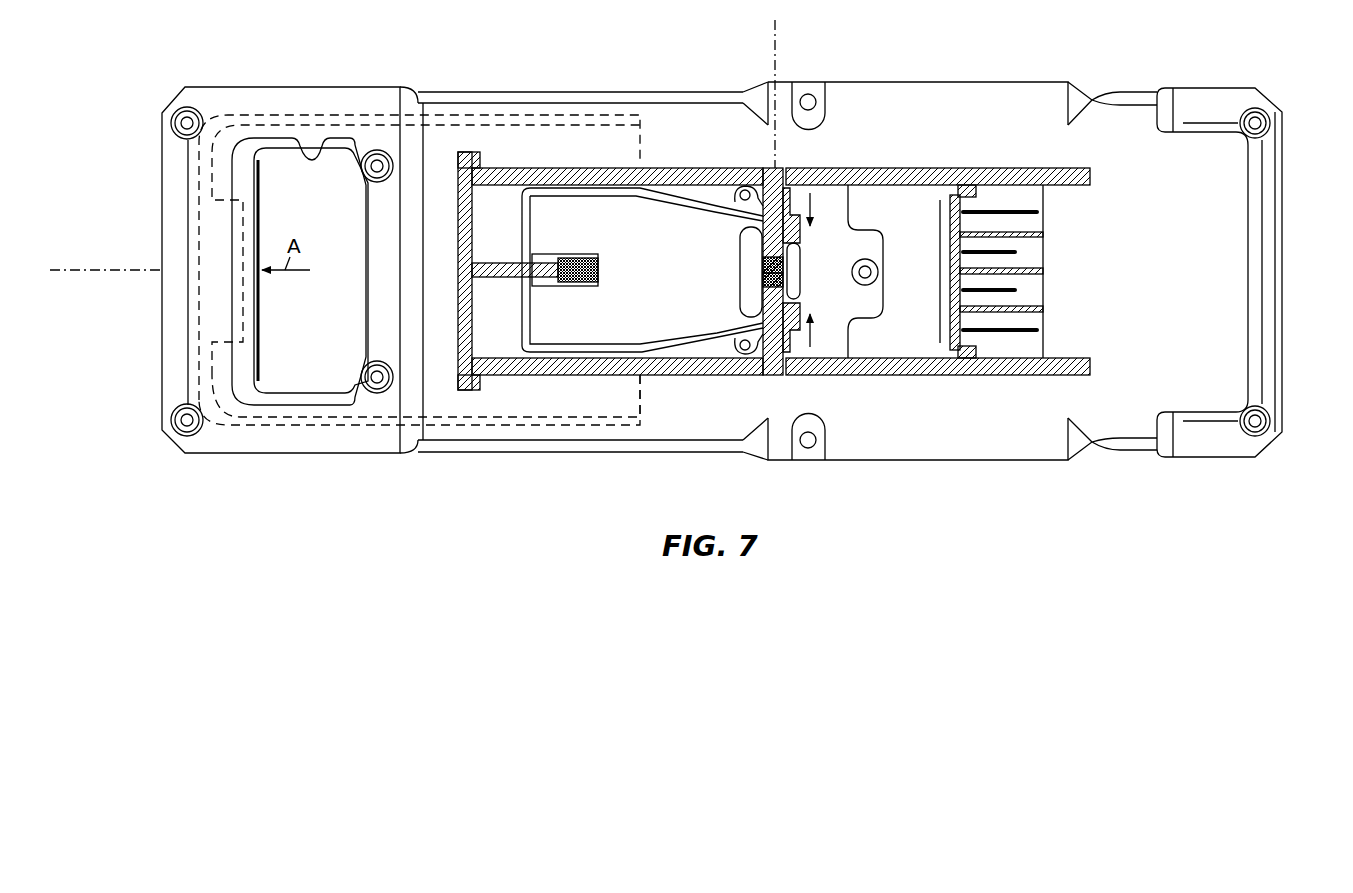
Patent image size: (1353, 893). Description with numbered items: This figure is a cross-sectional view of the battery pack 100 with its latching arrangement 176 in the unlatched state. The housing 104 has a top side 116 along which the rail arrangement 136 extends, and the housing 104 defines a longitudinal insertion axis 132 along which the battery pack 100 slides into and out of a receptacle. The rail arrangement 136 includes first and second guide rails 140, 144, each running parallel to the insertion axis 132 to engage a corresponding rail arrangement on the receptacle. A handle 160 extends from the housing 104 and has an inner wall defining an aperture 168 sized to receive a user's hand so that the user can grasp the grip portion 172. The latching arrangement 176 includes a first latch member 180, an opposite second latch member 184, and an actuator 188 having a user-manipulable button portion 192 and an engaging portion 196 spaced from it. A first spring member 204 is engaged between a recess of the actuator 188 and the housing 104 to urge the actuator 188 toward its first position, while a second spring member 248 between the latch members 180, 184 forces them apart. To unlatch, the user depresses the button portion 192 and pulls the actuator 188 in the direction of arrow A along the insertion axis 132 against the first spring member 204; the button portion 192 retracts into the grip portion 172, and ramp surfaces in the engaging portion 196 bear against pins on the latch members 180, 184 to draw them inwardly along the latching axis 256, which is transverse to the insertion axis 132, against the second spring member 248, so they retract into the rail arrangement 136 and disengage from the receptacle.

The battery pack 100 is at (408, 516).
The housing 104 is at (1030, 60).
The top side 116 is at (1228, 212).
The longitudinal insertion axis 132 is at (120, 270).
The rail arrangement 136 is at (990, 386).
The first guide rail 140 is at (921, 167).
The second guide rail 144 is at (920, 376).
The handle 160 is at (146, 152).
The aperture 168 is at (304, 158).
The grip portion 172 is at (150, 372).
The latching arrangement 176 is at (826, 138).
The first latch member 180 is at (765, 176).
The second latch member 184 is at (780, 378).
The actuator 188 is at (506, 143).
The button portion 192 is at (258, 298).
The engaging portion 196 is at (687, 320).
The first spring member 204 is at (582, 286).
The second spring member 248 is at (765, 272).
The latching axis 256 is at (776, 60).